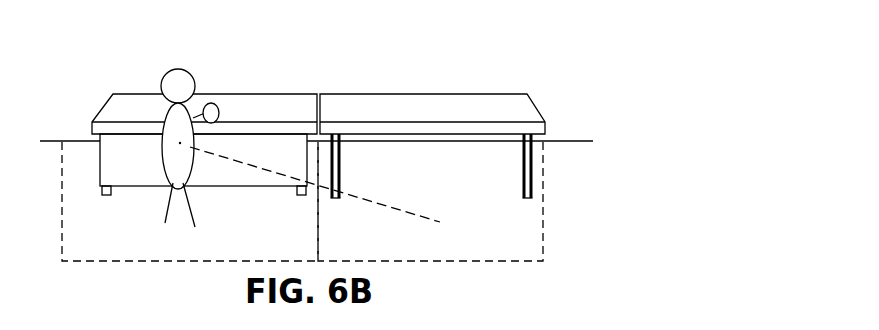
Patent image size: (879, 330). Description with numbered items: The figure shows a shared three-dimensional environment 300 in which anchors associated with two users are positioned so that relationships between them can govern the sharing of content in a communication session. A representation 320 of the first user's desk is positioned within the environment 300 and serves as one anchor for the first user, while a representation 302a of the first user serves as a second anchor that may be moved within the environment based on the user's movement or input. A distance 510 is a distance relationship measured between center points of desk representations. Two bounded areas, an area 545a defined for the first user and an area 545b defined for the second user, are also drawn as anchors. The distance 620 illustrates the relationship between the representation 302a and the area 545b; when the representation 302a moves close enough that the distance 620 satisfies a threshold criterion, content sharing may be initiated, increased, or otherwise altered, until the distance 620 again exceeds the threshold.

The 3D environment 300 is at (94, 52).
The distance 510 is at (243, 110).
The representation of the first user's desk 320 is at (355, 93).
The representation of the first user 302a is at (165, 213).
The distance 620 is at (402, 210).
The area 545a is at (305, 252).
The area 545b is at (383, 252).